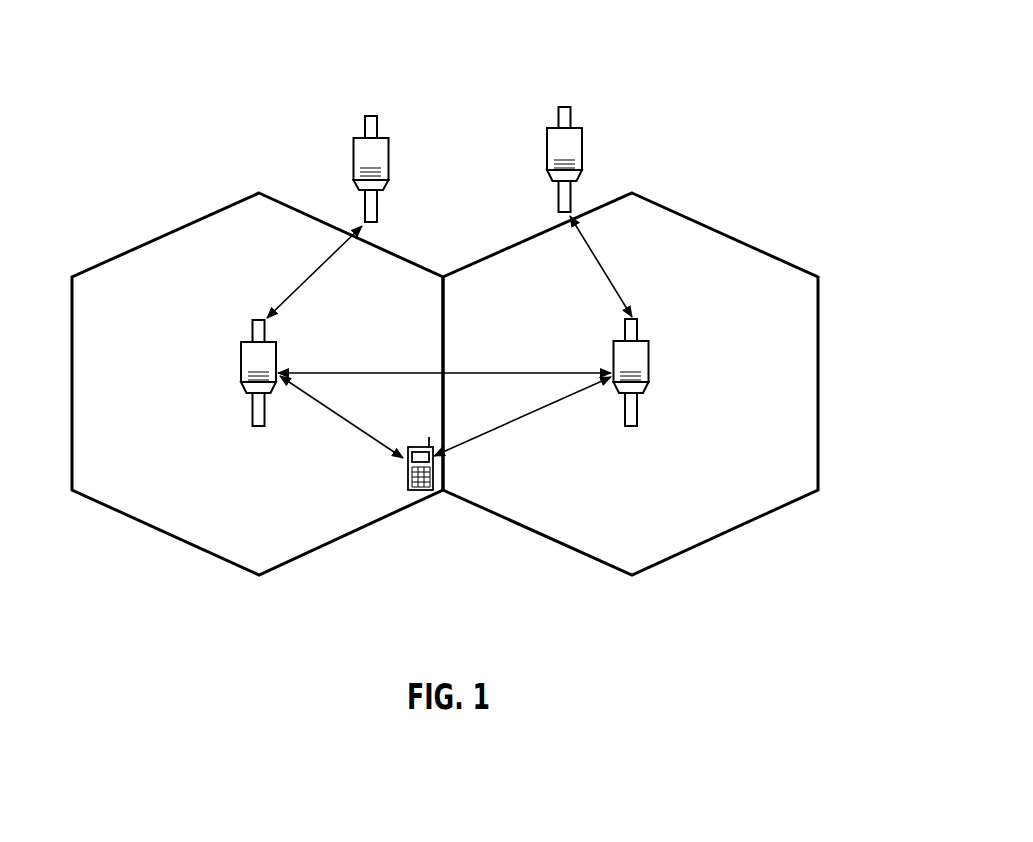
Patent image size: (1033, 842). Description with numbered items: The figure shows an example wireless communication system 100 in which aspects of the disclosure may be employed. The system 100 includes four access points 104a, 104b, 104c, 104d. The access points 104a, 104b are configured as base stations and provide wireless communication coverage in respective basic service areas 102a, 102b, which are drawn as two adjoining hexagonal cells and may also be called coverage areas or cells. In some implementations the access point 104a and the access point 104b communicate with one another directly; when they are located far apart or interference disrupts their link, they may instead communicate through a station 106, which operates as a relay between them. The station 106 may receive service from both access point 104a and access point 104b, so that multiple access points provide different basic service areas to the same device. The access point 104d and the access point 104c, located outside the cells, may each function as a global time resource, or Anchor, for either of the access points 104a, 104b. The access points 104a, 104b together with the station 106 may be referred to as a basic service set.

The wireless communication system 100 is at (841, 84).
The basic service area 102a is at (166, 235).
The basic service area 102b is at (742, 219).
The access point 104a is at (240, 347).
The access point 104b is at (612, 348).
The access point 104c is at (546, 135).
The access point 104d is at (353, 145).
The station 106 is at (425, 447).